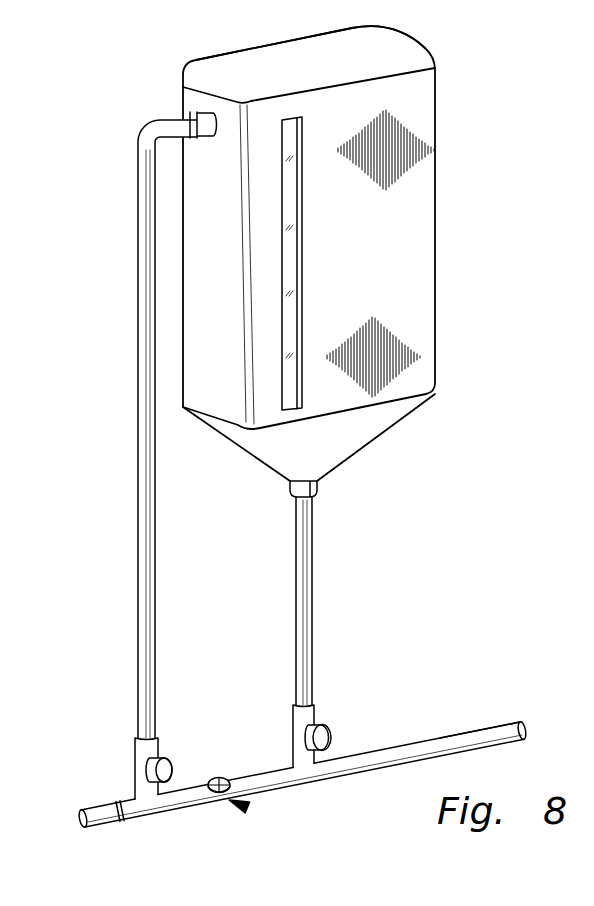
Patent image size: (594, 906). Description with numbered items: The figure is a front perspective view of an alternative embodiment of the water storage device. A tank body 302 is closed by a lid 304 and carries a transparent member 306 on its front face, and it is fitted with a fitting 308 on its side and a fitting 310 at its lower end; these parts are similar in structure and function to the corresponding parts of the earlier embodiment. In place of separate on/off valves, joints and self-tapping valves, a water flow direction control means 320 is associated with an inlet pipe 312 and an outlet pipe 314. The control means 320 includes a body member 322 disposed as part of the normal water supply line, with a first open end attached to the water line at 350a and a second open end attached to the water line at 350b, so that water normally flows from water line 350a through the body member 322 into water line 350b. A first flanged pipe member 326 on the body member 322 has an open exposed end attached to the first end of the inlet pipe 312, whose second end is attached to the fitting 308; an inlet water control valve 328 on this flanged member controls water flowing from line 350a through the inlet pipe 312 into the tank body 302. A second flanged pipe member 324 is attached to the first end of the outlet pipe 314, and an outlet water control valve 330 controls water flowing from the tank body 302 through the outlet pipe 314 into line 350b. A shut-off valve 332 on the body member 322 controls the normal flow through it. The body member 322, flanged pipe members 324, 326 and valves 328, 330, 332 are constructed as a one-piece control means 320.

The tank body 302 is at (418, 307).
The lid 304 is at (378, 48).
The transparent member 306 is at (298, 252).
The fitting 308 is at (193, 113).
The fitting 310 is at (317, 487).
The inlet pipe 312 is at (140, 603).
The outlet pipe 314 is at (307, 630).
The water flow direction control means 320 is at (248, 808).
The body member 322 is at (192, 808).
The second flanged pipe member 324 is at (340, 778).
The first flanged pipe member 326 is at (140, 785).
The inlet water control valve 328 is at (167, 768).
The outlet water control valve 330 is at (332, 737).
The shut-off valve 332 is at (221, 779).
The water line 350a is at (97, 808).
The water line 350b is at (492, 732).